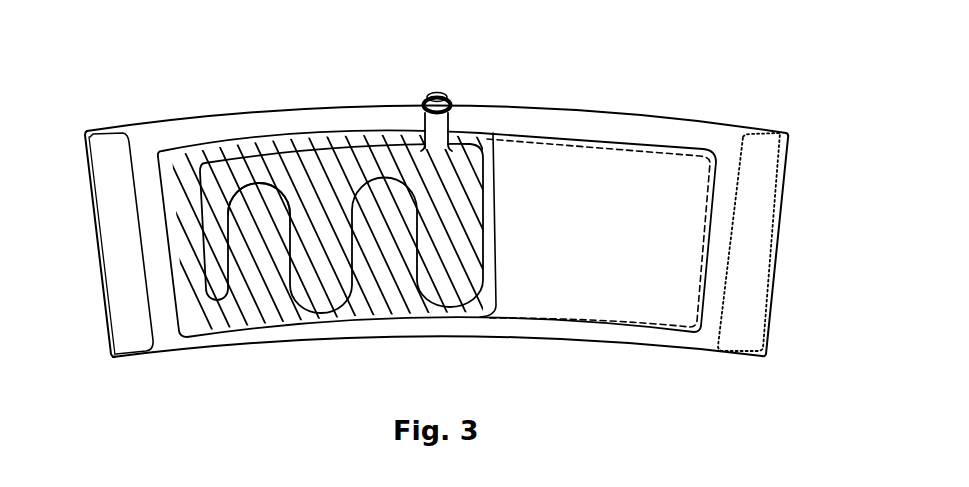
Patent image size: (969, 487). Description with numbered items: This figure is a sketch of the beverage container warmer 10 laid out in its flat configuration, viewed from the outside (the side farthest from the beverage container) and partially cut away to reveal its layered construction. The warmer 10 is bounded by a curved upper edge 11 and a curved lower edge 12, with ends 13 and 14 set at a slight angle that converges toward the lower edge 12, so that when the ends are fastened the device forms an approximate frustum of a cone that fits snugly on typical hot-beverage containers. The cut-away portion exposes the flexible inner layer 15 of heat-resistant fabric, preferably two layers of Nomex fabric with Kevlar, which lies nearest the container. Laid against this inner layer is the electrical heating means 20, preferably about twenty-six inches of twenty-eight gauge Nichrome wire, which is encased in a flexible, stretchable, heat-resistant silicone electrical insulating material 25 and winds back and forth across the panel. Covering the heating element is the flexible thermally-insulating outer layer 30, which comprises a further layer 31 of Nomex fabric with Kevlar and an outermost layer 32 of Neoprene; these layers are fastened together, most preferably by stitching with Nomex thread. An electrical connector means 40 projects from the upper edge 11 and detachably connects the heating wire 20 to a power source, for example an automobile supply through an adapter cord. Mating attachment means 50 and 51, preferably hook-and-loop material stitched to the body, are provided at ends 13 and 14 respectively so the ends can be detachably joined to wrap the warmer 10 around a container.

The container warmer 10 is at (443, 201).
The upper edge 11 is at (534, 63).
The lower edge 12 is at (638, 346).
The end 13 is at (98, 236).
The end 14 is at (768, 336).
The flexible inner layer 15 is at (173, 163).
The electrical heating means 20 is at (263, 185).
The flexible thermally-resistant electrical insulating material 25 is at (262, 277).
The flexible thermally-insulating outer layer 30 is at (565, 300).
The further layer 31 is at (455, 314).
The outermost layer 32 is at (463, 318).
The electrical connector means 40 is at (424, 99).
The mating attachment means 50 is at (122, 313).
The mating attachment means 51 is at (750, 265).